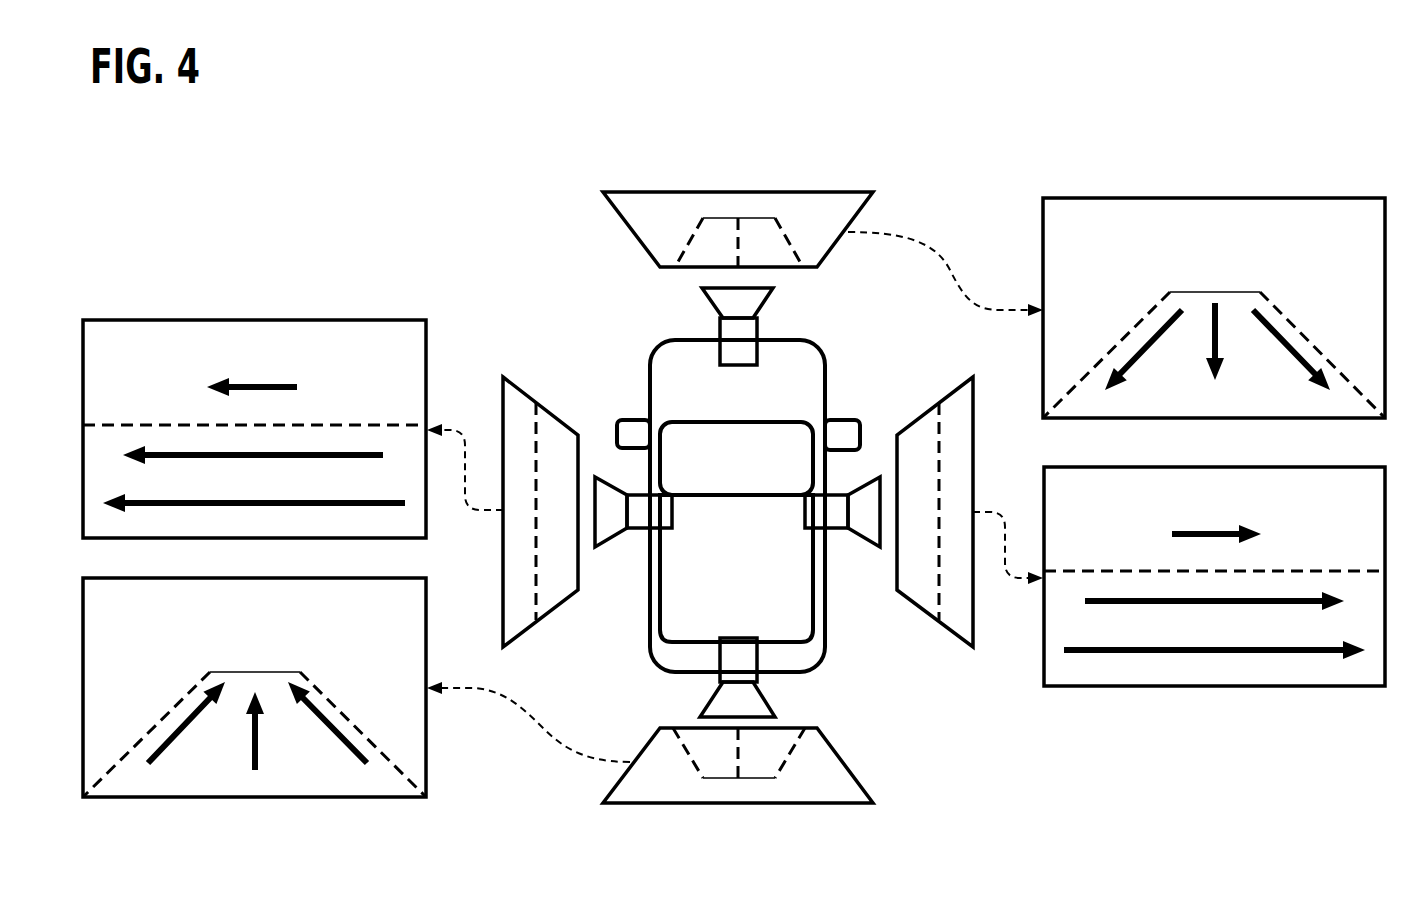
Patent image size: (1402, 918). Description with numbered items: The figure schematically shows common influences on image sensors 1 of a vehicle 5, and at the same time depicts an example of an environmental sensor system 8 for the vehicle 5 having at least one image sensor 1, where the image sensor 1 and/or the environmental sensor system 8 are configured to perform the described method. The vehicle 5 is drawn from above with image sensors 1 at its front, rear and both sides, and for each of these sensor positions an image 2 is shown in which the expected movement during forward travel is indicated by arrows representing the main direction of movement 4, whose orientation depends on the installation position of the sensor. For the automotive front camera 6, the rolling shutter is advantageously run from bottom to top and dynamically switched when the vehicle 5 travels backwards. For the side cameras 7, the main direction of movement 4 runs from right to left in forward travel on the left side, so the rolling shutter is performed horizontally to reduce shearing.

The image sensor 1 is at (726, 333).
The display device 2 is at (140, 320).
The main direction of movement 4 is at (345, 452).
The vehicle 5 is at (827, 638).
The front camera 6 is at (757, 303).
The side camera 7 is at (605, 497).
The environmental sensor system 8 is at (500, 242).